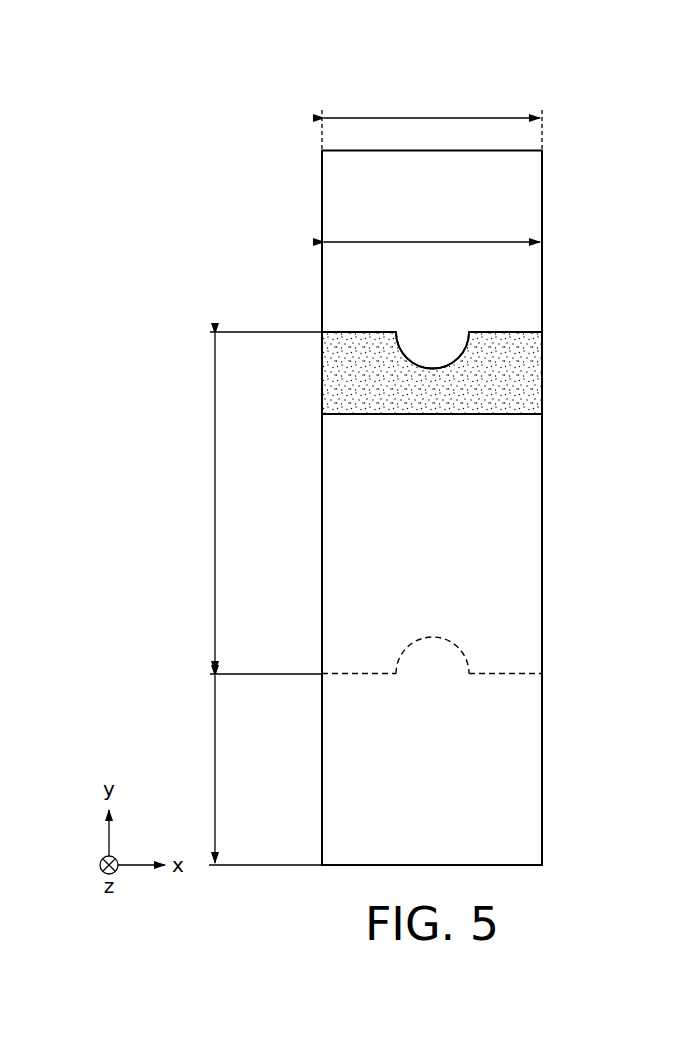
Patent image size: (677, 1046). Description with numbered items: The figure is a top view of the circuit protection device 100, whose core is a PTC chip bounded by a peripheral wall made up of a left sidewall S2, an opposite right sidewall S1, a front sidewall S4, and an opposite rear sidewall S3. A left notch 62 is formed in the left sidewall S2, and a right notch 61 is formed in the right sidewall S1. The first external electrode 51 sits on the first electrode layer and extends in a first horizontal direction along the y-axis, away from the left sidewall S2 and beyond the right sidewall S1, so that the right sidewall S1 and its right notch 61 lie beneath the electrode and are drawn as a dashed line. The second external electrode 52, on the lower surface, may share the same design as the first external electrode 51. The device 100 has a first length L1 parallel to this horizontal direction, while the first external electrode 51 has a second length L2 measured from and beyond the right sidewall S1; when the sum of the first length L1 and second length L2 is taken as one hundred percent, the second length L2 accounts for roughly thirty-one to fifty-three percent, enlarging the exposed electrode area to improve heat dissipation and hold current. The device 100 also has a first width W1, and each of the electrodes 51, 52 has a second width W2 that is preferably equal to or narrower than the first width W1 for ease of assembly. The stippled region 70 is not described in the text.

The circuit protection device 100 is at (212, 89).
The first external electrode 51 is at (532, 772).
The second external electrode 52 is at (532, 191).
The right notch 61 is at (432, 668).
The left notch 62 is at (432, 338).
The adhesive / filled region 70 is at (530, 373).
The right sidewall S1 is at (518, 687).
The left sidewall S2 is at (520, 318).
The rear sidewall S3 is at (553, 540).
The front sidewall S4 is at (310, 538).
The first width W1 is at (432, 228).
The second width W2 is at (432, 121).
The first length L1 is at (250, 503).
The second length L2 is at (251, 770).